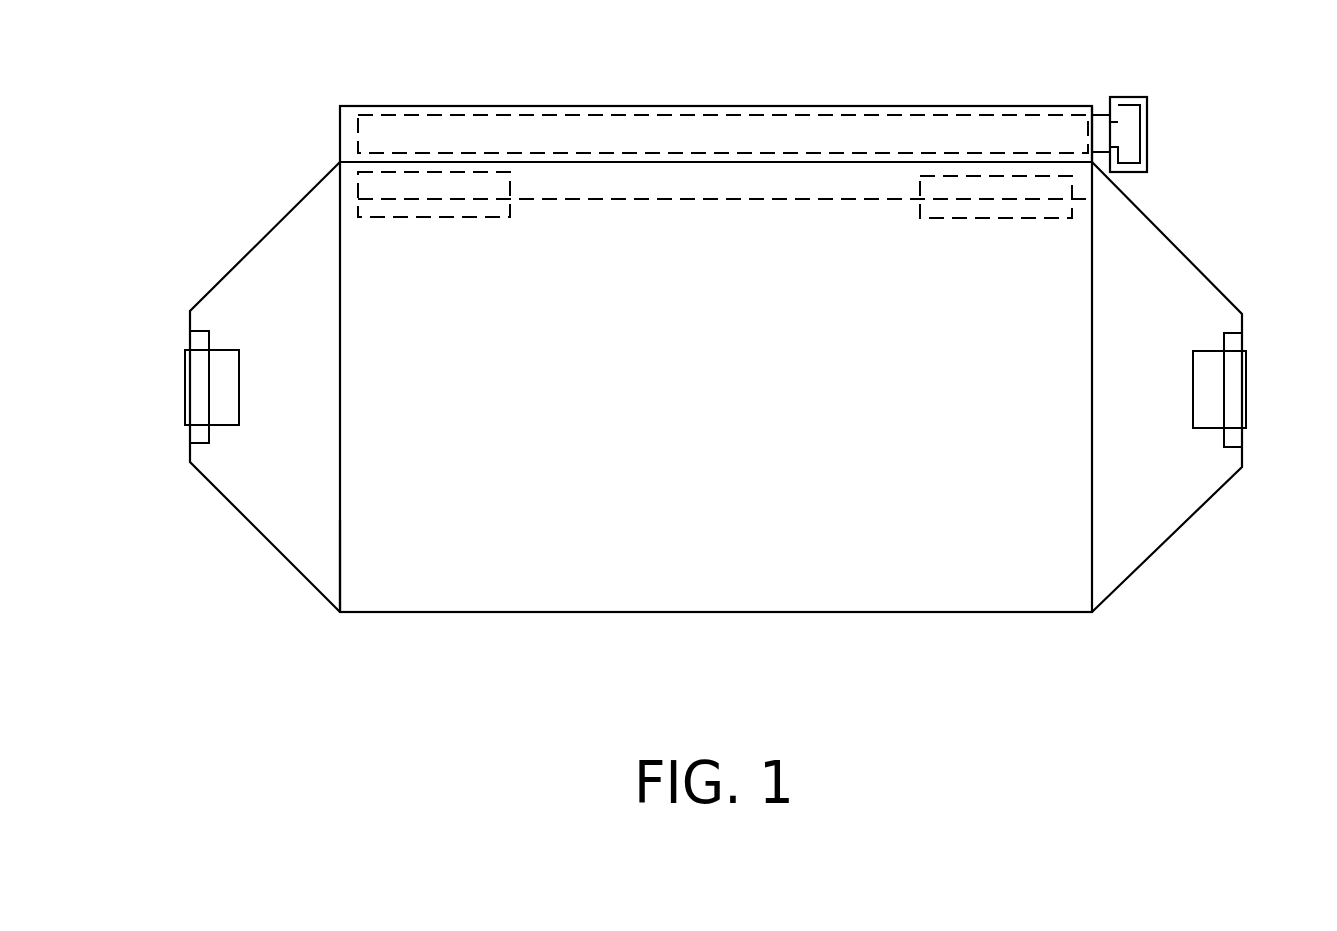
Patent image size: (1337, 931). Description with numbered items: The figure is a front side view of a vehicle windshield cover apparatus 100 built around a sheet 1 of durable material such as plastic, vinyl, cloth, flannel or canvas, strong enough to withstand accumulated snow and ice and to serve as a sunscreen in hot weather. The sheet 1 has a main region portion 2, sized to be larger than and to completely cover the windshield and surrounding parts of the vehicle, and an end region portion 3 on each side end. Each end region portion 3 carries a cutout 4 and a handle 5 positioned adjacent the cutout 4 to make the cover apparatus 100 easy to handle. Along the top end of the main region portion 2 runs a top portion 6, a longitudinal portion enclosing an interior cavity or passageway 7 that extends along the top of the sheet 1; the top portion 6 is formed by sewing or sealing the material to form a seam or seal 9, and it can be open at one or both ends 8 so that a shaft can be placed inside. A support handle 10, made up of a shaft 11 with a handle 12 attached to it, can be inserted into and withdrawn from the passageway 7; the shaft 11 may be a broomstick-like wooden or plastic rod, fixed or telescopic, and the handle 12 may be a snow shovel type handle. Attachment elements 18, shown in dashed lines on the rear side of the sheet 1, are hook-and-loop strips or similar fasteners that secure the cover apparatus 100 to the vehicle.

The cover apparatus 100 is at (438, 665).
The sheet 1 is at (998, 613).
The main region portion 2 is at (390, 575).
The end region portion 3 is at (274, 266).
The cutout 4 is at (222, 406).
The handle 5 is at (196, 387).
The top portion 6 is at (968, 105).
The interior cavity or passageway 7 is at (1038, 110).
The end of top portion 8 is at (1093, 107).
The seam or seal 9 is at (685, 199).
The support handle 10 is at (855, 135).
The shaft 11 is at (575, 133).
The handle 12 is at (1150, 122).
The attachment element 18 is at (388, 187).